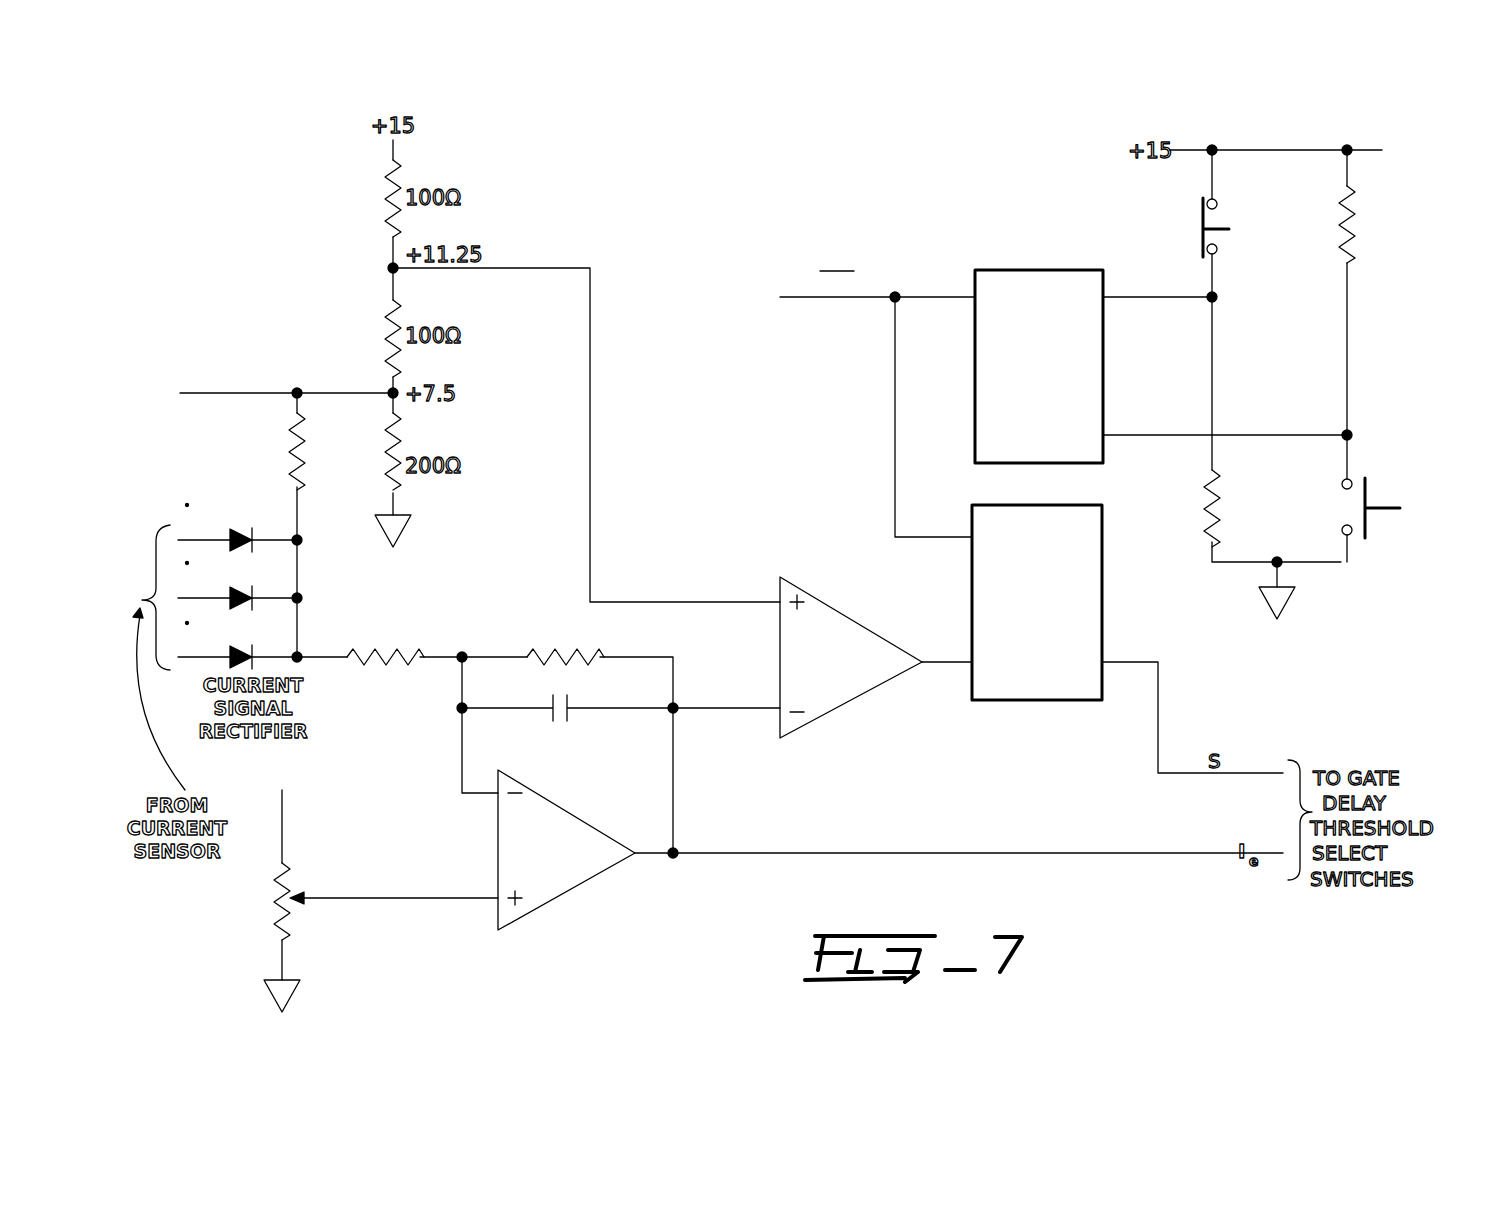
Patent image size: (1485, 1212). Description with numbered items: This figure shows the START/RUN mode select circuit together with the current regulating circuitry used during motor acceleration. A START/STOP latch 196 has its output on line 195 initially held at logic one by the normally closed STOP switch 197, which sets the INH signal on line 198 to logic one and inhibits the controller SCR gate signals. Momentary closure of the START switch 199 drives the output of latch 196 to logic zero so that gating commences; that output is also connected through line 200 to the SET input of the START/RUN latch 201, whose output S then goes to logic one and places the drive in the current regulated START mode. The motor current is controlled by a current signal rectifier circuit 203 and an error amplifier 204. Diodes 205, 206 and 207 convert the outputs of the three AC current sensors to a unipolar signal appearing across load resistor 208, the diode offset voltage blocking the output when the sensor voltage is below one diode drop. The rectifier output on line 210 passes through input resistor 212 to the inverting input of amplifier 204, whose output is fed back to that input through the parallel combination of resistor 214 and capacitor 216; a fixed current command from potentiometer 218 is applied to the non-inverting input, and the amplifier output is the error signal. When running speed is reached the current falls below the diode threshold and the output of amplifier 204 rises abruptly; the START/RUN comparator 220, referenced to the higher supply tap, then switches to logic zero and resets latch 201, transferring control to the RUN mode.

The output line of START/STOP latch 195 is at (1148, 284).
The START/STOP latch 196 is at (1022, 268).
The STOP switch 197 is at (1218, 204).
The INH output line 198 is at (906, 292).
The START switch 199 is at (1378, 482).
The line to SET input 200 is at (892, 441).
The START/RUN latch 201 is at (982, 502).
The current signal rectifier circuit 203 is at (175, 519).
The error amplifier 204 is at (586, 882).
The diode 205 is at (246, 530).
The diode 206 is at (263, 590).
The diode 207 is at (259, 642).
The load resistor 208 is at (290, 456).
The rectifier output line 210 is at (326, 656).
The input resistor 212 is at (385, 662).
The feedback resistor 214 is at (602, 660).
The feedback capacitor 216 is at (560, 720).
The potentiometer 218 is at (244, 919).
The START/RUN comparator 220 is at (862, 712).